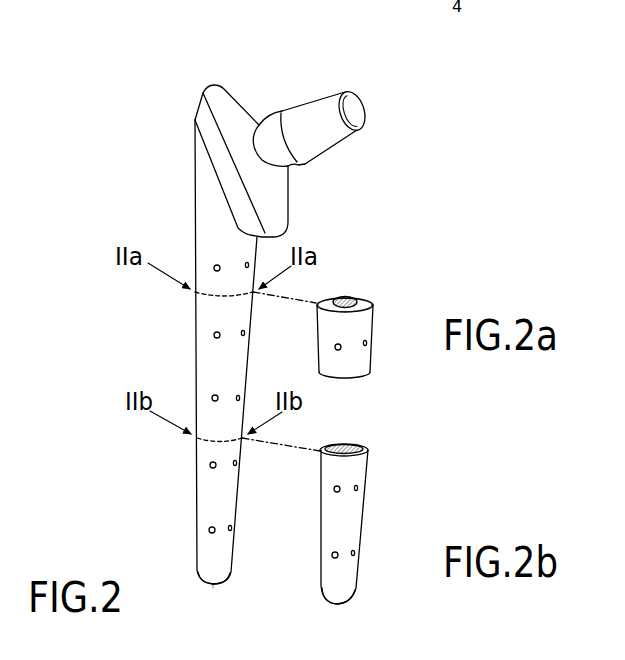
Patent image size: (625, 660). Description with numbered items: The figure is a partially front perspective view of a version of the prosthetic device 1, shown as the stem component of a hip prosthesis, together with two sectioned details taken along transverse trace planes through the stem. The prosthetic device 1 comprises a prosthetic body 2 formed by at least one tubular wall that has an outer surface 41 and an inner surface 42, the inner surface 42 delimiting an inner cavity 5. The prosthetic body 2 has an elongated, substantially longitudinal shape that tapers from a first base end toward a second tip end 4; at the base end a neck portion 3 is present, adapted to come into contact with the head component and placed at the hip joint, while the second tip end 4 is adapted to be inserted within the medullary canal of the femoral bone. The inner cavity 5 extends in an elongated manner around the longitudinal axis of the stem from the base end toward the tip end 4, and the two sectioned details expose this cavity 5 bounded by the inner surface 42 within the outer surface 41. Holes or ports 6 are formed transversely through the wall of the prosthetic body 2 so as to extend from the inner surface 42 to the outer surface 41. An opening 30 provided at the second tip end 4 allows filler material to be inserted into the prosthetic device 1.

In FIG. 2, the prosthetic device 1 is at (158, 164).
In FIG. 2, the prosthetic body 2 is at (203, 200).
In FIG. 2A, the prosthetic body 2 is at (374, 323).
In FIG. 2B, the prosthetic body 2 is at (366, 521).
In FIG. 2, the neck portion 3 is at (301, 100).
In FIG. 2, the second tip end 4 is at (205, 584).
In FIG. 2B, the second tip end 4 is at (350, 605).
In FIG. 2, the outer surface 41 is at (194, 163).
In FIG. 2A, the outer surface 41 is at (318, 329).
In FIG. 2A, the inner surface 42 is at (343, 296).
In FIG. 2A, the inner cavity 5 is at (354, 295).
In FIG. 2B, the inner cavity 5 is at (353, 444).
In FIG. 2, the holes or ports 6 is at (210, 392).
In FIG. 2A, the holes or ports 6 is at (369, 346).
In FIG. 2B, the holes or ports 6 is at (333, 552).
In FIG. 2, the opening 30 is at (319, 606).